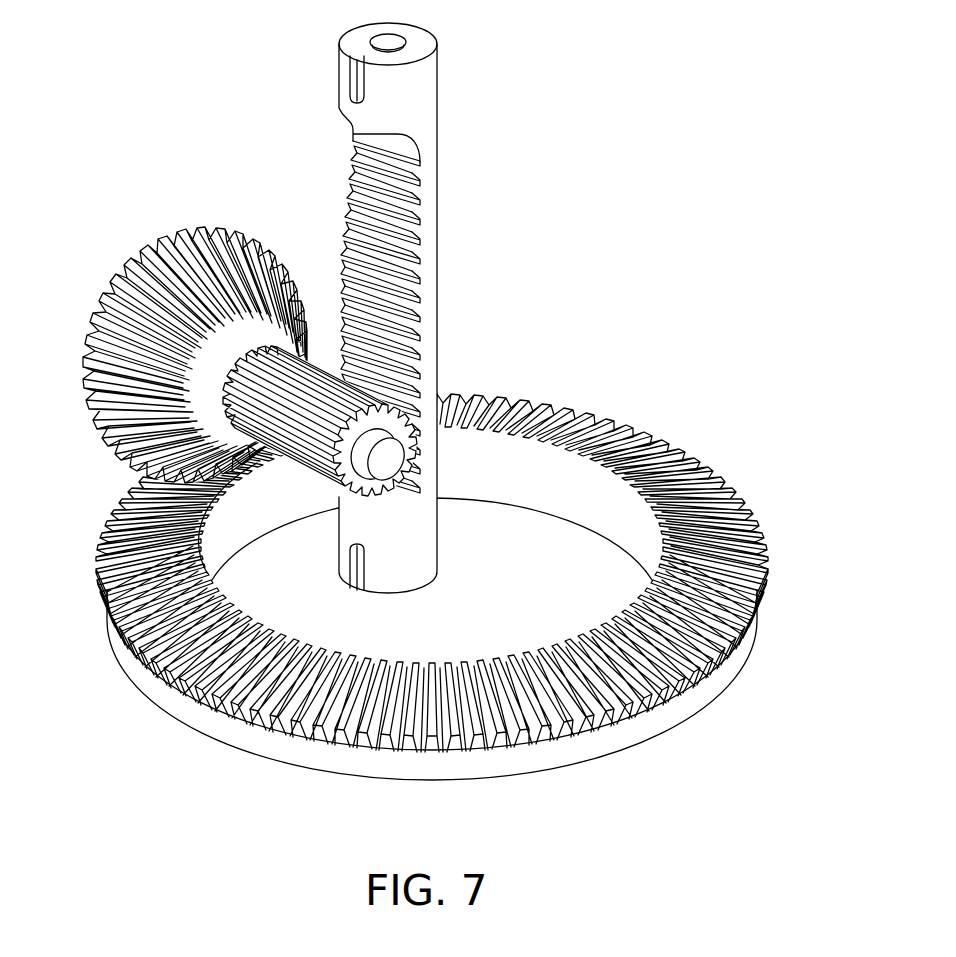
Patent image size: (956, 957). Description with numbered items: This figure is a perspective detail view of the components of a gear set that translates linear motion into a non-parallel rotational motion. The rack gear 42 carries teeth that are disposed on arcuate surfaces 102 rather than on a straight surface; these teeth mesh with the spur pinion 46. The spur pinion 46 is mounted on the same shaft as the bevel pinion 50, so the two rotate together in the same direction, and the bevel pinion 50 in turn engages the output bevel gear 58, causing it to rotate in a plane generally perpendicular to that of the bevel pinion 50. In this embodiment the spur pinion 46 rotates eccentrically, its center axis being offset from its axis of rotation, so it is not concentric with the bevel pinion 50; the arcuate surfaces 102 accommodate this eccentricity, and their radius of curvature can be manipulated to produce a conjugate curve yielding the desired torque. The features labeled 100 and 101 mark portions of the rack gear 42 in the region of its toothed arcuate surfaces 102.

The rack gear 42 is at (392, 308).
The spur pinion 46 is at (303, 467).
The bevel pinion gear 50 is at (150, 288).
The output bevel gear 58 is at (742, 582).
The worm 100 is at (392, 317).
The worm thread 101 is at (421, 234).
The arcuate surfaces 102 is at (396, 290).